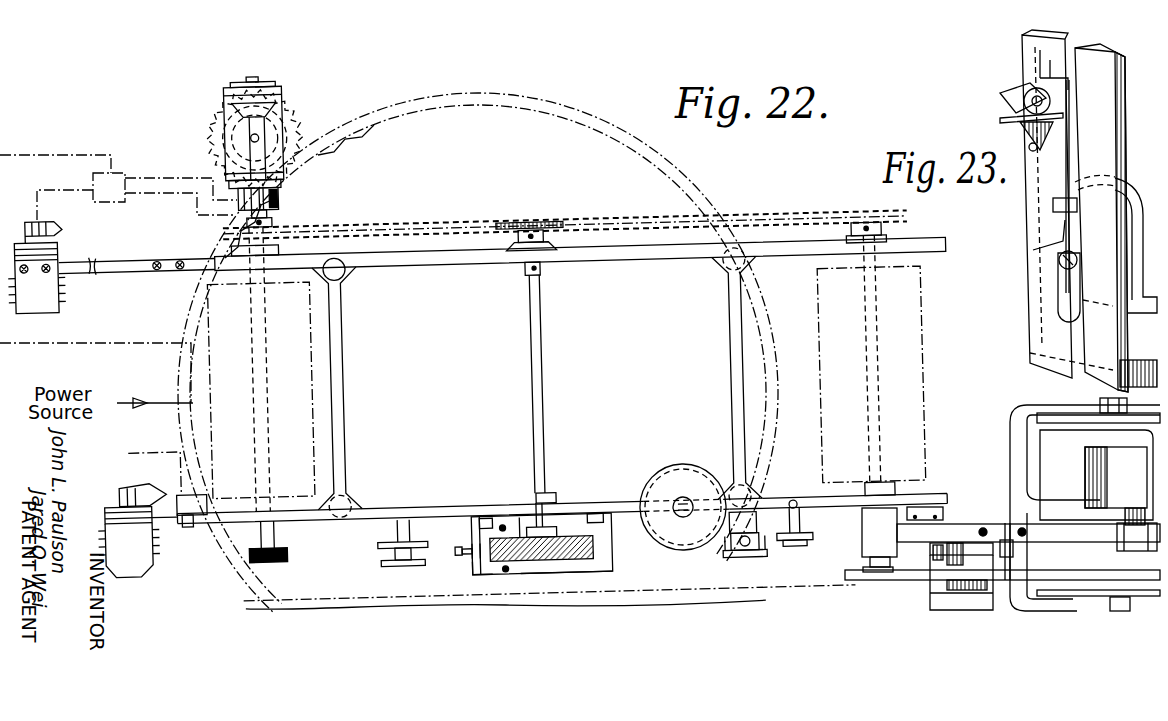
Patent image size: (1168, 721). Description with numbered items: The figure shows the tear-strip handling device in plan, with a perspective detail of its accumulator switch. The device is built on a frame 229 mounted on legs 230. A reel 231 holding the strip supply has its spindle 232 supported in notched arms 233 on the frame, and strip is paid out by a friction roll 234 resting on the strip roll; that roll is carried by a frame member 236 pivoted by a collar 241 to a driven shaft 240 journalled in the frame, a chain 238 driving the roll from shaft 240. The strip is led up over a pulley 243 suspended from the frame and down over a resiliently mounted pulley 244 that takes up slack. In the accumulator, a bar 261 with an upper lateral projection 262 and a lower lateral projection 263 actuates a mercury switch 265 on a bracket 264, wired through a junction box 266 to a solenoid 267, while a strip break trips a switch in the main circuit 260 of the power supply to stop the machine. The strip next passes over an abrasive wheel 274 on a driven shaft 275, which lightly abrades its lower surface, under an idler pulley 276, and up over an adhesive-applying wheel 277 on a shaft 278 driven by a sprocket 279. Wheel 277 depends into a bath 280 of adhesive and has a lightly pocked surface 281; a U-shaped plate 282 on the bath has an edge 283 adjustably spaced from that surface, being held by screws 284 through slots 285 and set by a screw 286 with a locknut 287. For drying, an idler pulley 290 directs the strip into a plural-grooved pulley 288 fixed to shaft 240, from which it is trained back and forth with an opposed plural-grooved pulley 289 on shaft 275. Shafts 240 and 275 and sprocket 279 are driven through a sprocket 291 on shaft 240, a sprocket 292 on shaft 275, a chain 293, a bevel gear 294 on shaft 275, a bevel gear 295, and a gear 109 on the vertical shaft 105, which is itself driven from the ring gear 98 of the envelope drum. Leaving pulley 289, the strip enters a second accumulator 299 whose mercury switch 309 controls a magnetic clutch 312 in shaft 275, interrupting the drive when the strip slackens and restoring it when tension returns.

In FIG. 22, the ring gear 98 is at (562, 84).
In FIG. 22, the vertically disposed shaft 105 is at (213, 140).
In FIG. 22, the gear 109 is at (225, 126).
In FIG. 22, the frame 229 is at (658, 258).
In FIG. 22, the legs 230 is at (347, 270).
In FIG. 22, the reel 231 is at (1055, 448).
In FIG. 22, the spindle 232 is at (1112, 606).
In FIG. 22, the notched arms 233 is at (1060, 405).
In FIG. 22, the friction roll 234 is at (1116, 477).
In FIG. 22, the frame member 236 is at (915, 580).
In FIG. 22, the chain 238 is at (1006, 580).
In FIG. 22, the driven shaft 240 is at (880, 375).
In FIG. 22, the collar 241 is at (862, 525).
In FIG. 22, the pulley 243 is at (800, 547).
In FIG. 22, the pulley 244 is at (750, 558).
In FIG. 22, the main circuit 260 is at (232, 585).
In FIG. 23, the bar 261 is at (1057, 186).
In FIG. 23, the upper lateral projection 262 is at (1047, 48).
In FIG. 23, the lower lateral projection 263 is at (1035, 246).
In FIG. 23, the bracket 264 is at (1020, 127).
In FIG. 22, the mercury switch 265 is at (120, 486).
In FIG. 23, the mercury switch 265 is at (1005, 100).
In FIG. 22, the junction box 266 is at (198, 498).
In FIG. 22, the solenoid 267 is at (990, 600).
In FIG. 22, the abrasive wheel 274 is at (283, 560).
In FIG. 22, the driven shaft 275 is at (272, 540).
In FIG. 22, the idler pulley 276 is at (392, 560).
In FIG. 22, the adhesive-applying wheel 277 is at (578, 562).
In FIG. 22, the shaft 278 is at (543, 386).
In FIG. 22, the sprocket 279 is at (540, 228).
In FIG. 22, the bath 280 is at (612, 570).
In FIG. 22, the pocked surface 281 is at (597, 555).
In FIG. 22, the U-shaped plate 282 is at (480, 573).
In FIG. 22, the edge 283 is at (484, 518).
In FIG. 22, the screws 284 is at (505, 572).
In FIG. 22, the slots 285 is at (503, 531).
In FIG. 22, the screw 286 is at (455, 550).
In FIG. 22, the locknut 287 is at (458, 545).
In FIG. 22, the plural-grooved pulley 288 is at (820, 295).
In FIG. 22, the second plural-grooved pulley 289 is at (312, 381).
In FIG. 22, the idler pulley 290 is at (690, 440).
In FIG. 22, the sprocket 291 is at (868, 222).
In FIG. 22, the sprocket 292 is at (275, 228).
In FIG. 22, the chain 293 is at (440, 220).
In FIG. 22, the bevel gear 294 is at (270, 118).
In FIG. 22, the bevel gear 295 is at (262, 140).
In FIG. 22, the second accumulator 299 is at (70, 300).
In FIG. 22, the mercury switch 309 is at (62, 230).
In FIG. 22, the magnetic clutch 312 is at (285, 200).